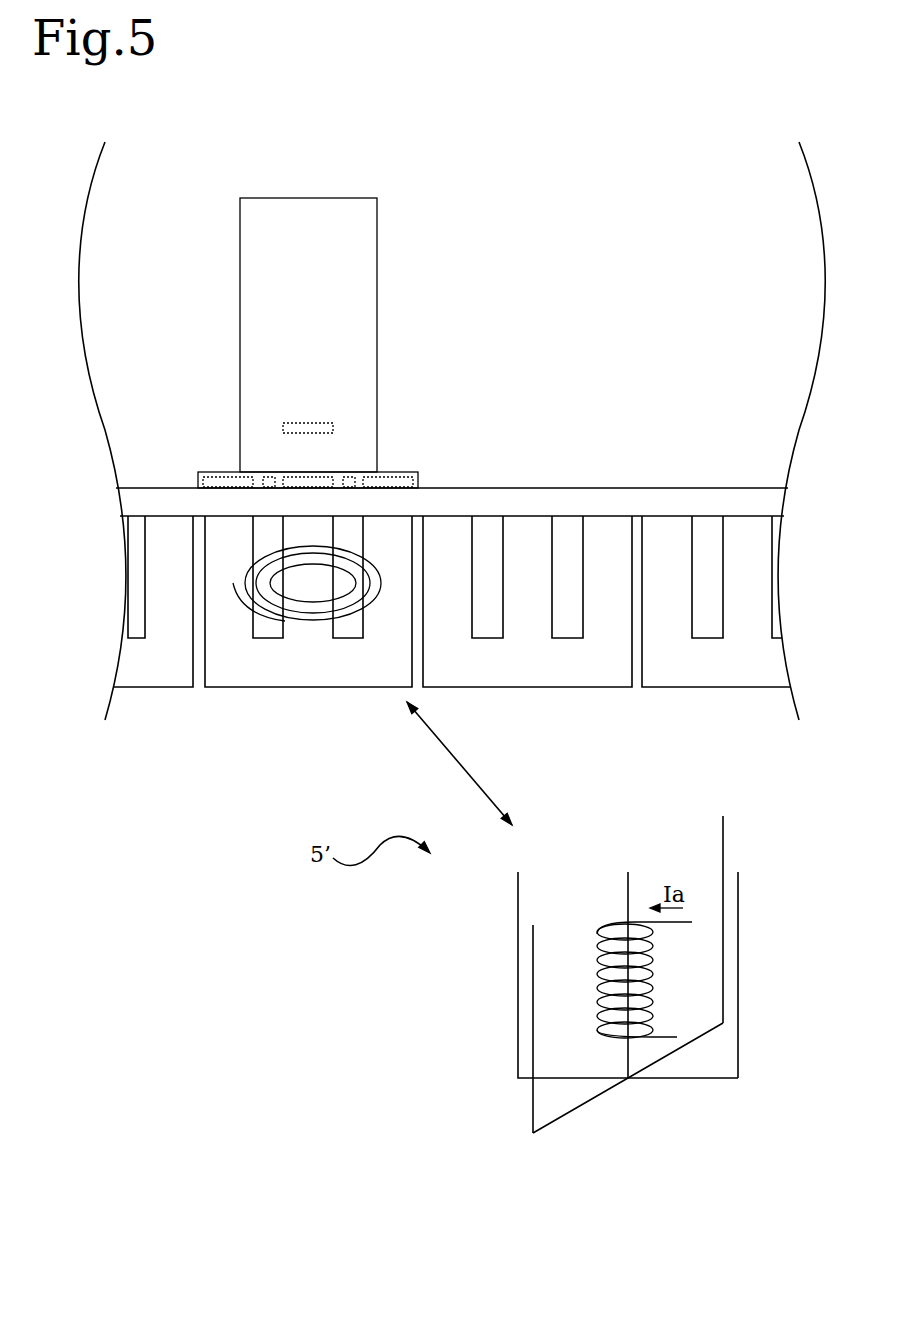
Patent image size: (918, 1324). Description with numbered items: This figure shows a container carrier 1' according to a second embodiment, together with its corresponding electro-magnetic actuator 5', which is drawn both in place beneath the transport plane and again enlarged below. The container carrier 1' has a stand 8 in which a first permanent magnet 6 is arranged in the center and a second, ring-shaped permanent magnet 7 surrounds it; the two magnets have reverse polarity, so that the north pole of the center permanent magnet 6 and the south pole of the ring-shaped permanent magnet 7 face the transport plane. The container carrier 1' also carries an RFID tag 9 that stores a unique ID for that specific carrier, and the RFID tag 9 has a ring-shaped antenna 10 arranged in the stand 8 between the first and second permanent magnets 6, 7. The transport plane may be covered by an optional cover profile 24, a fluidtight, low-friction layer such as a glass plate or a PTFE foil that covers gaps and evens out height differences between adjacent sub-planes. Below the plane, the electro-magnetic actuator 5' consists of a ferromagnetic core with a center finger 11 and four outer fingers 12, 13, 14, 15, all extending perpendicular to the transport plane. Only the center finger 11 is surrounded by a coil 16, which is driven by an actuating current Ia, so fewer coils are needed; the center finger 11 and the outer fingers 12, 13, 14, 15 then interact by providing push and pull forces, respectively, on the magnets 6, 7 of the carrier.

The container carrier 1' is at (308, 274).
The electro-magnetic actuator 5' is at (452, 639).
The first permanent magnet 6 is at (310, 482).
The second permanent magnet 7 is at (390, 482).
The stand 8 is at (418, 477).
The RFID tag 9 is at (312, 425).
The ring shaped antenna 10 is at (348, 482).
The center finger 11 is at (628, 893).
The outer finger 12 is at (723, 878).
The outer finger 13 is at (738, 1015).
The outer finger 14 is at (533, 1110).
The outer finger 15 is at (518, 1010).
The coil 16 is at (655, 1040).
The cover profile 24 is at (582, 498).